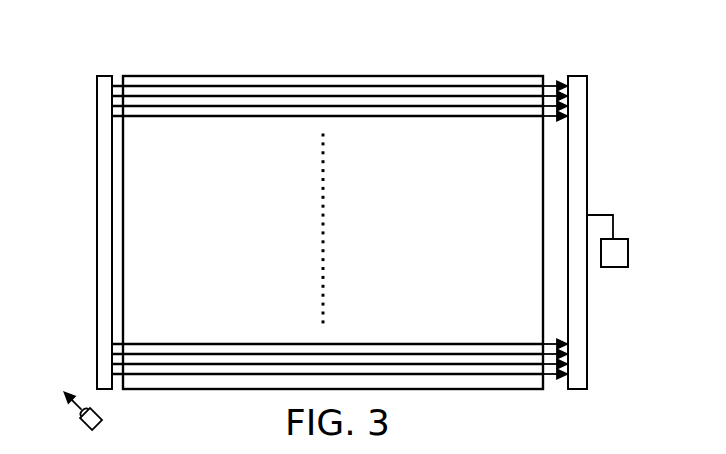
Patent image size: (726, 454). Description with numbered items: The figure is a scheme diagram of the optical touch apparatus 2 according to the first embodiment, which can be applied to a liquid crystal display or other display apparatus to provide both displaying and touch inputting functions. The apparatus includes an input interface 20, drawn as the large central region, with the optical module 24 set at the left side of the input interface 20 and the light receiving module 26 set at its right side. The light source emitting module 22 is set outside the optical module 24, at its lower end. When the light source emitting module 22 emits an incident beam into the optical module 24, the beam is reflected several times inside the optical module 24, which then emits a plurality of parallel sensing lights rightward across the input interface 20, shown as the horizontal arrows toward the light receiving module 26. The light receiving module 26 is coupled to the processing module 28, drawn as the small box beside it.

The optical touch apparatus 2 is at (424, 49).
The input interface 20 is at (263, 75).
The light source emitting module 22 is at (89, 406).
The optical module 24 is at (100, 75).
The light receiving module 26 is at (580, 75).
The processing module 28 is at (612, 268).